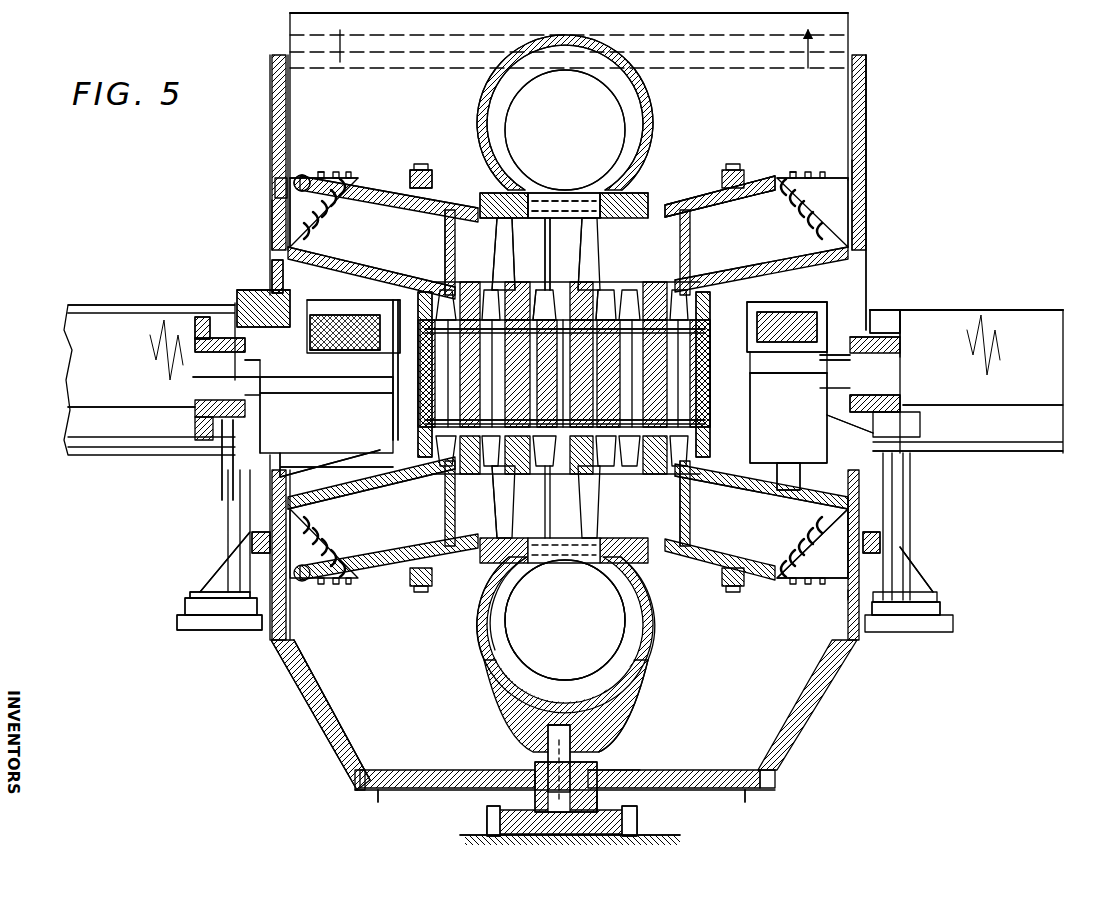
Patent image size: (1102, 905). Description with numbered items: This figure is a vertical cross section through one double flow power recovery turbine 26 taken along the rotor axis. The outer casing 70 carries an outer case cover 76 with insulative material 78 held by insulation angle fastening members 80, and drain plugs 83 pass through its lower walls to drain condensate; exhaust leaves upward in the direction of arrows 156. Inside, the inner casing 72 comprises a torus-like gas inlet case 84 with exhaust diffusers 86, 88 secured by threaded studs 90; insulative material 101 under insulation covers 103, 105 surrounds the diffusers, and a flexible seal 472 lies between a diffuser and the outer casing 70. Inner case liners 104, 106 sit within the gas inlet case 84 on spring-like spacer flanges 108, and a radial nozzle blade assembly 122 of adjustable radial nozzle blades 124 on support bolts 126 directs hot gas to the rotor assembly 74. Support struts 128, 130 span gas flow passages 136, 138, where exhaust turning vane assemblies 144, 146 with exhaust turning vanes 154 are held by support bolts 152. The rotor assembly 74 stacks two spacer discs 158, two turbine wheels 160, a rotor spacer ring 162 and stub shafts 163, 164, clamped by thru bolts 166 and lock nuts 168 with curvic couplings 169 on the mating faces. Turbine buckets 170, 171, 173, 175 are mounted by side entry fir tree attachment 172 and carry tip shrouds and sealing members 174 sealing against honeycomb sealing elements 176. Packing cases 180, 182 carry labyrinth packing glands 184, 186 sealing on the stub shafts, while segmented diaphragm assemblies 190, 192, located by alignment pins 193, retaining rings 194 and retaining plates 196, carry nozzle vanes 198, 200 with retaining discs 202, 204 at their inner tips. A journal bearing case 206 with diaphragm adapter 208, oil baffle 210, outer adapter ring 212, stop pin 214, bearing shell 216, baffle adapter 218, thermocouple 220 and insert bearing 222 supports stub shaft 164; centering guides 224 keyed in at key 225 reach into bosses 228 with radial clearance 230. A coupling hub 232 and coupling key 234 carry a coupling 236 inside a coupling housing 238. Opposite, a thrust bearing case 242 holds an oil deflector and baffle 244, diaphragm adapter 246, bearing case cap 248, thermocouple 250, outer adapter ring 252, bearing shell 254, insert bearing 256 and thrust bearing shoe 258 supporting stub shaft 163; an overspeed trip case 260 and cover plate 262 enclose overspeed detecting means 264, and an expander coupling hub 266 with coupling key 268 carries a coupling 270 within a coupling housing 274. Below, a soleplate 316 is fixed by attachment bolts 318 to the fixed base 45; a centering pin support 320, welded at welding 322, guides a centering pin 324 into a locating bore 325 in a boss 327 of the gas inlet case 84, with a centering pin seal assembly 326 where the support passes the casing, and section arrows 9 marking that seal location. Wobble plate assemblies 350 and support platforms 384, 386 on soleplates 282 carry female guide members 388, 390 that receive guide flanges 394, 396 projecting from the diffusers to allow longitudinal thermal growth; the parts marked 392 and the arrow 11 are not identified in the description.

The section line 9 is at (585, 756).
The direction arrow 11 is at (842, 596).
The dynamoelectric machine 26 is at (870, 156).
The foundation 45 is at (470, 835).
The housing 70 is at (289, 128).
The inner manifold wall 72 is at (644, 102).
The rotor 74 is at (715, 346).
The lower housing wall 76 is at (312, 705).
The lower housing wall inner 78 is at (305, 690).
The lower wall lining 80 is at (330, 708).
The housing foot 83 is at (378, 798).
The manifold ring 84 is at (480, 130).
The conical shell 86 is at (320, 181).
The conical shell 88 is at (745, 190).
The flange 90 is at (412, 170).
The inner wall 101 is at (864, 200).
The outer wall 103 is at (272, 215).
The upper manifold passage 104 is at (572, 86).
The wall lining 105 is at (864, 222).
The lower manifold passage 106 is at (562, 676).
The bearing housing 108 is at (533, 193).
The bearing 122 is at (598, 193).
The shaft 124 is at (548, 193).
The bearing cap 126 is at (598, 205).
The inlet chamber 128 is at (331, 352).
The inlet chamber 130 is at (790, 365).
The passage 136 is at (389, 365).
The passage 138 is at (761, 367).
The guide vanes 144 is at (360, 176).
The guide vanes 146 is at (806, 176).
The vane bolts 152 is at (318, 172).
The vane support 154 is at (790, 188).
The cover plate 156 is at (340, 62).
The blade 158 is at (536, 290).
The blade 160 is at (584, 290).
The end plate 162 is at (727, 292).
The end ring 163 is at (393, 398).
The rotor core 164 is at (838, 391).
The tie bolt 166 is at (420, 455).
The end plate 168 is at (418, 366).
The support rod 169 is at (644, 341).
The support blade 170 is at (490, 240).
The support blade 171 is at (544, 254).
The support plate 172 is at (440, 270).
The support blade 173 is at (579, 254).
The shell rim 174 is at (676, 205).
The seal 175 is at (650, 243).
The shell rim 176 is at (665, 190).
The lower passage 180 is at (371, 495).
The lower passage 182 is at (761, 504).
The spacer 184 is at (398, 432).
The tie bolt 186 is at (712, 446).
The gland 190 is at (495, 195).
The lower ring portion 192 is at (640, 566).
The lower ring inner wall 193 is at (487, 600).
The lower manifold wall 194 is at (520, 592).
The lower ring outer wall 196 is at (470, 582).
The support blade 198 is at (495, 256).
The seal 200 is at (655, 222).
The lower support blade 202 is at (496, 502).
The lower support plate 204 is at (689, 503).
The bearing bracket 206 is at (624, 447).
The bearing 208 is at (760, 352).
The bearing housing 210 is at (773, 327).
The bearing 212 is at (787, 311).
The bearing cap 214 is at (822, 310).
The bearing bolt 216 is at (800, 302).
The coupling flange 218 is at (882, 320).
The seal 220 is at (842, 316).
The shaft flange 222 is at (828, 366).
The support block 224 is at (800, 480).
The support 225 is at (790, 470).
The lower guide vanes 228 is at (800, 520).
The lower vane support 230 is at (770, 495).
The coupling 232 is at (902, 332).
The coupling flange 234 is at (887, 400).
The inner shaft 236 is at (1005, 418).
The output shaft 238 is at (1040, 308).
The support web 242 is at (336, 463).
The spacer 244 is at (352, 397).
The bearing race 246 is at (404, 318).
The bearing 248 is at (375, 315).
The bearing retainer 250 is at (335, 300).
The coupling 252 is at (265, 300).
The seal plate 254 is at (283, 290).
The bearing sleeve 256 is at (330, 352).
The bearing bracket 258 is at (303, 395).
The coupling hub 260 is at (240, 305).
The bracket 262 is at (255, 380).
The hub 264 is at (270, 362).
The shaft flange 266 is at (200, 336).
The shaft flange 268 is at (196, 350).
The inner shaft 270 is at (90, 415).
The drive shaft 274 is at (68, 315).
The base plate 282 is at (190, 631).
The anchor bolt 316 is at (487, 820).
The anchor bolt 318 is at (636, 822).
The pedestal block 320 is at (535, 796).
The pedestal base 322 is at (600, 806).
The pedestal column 324 is at (550, 740).
The neck 325 is at (560, 724).
The base flange 326 is at (626, 770).
The neck wall 327 is at (592, 722).
The support frame 350 is at (221, 495).
The foot block 384 is at (184, 608).
The foot block 386 is at (942, 608).
The bracket 388 is at (210, 560).
The bracket 390 is at (897, 554).
The shim 392 is at (200, 590).
The foot pad 394 is at (252, 540).
The foot pad 396 is at (882, 542).
The wall 472 is at (863, 168).